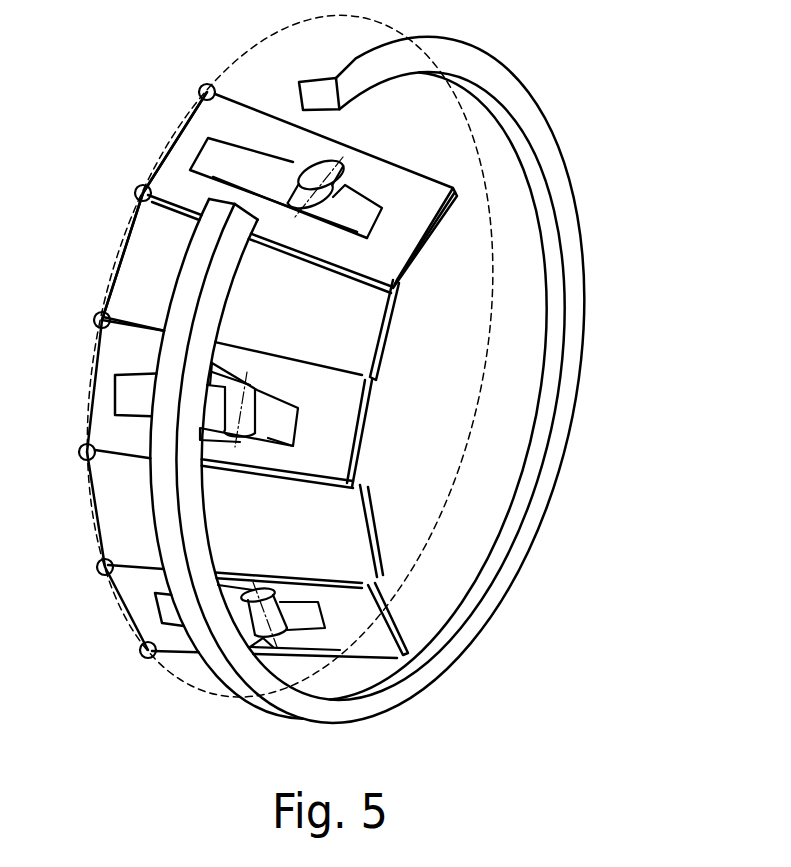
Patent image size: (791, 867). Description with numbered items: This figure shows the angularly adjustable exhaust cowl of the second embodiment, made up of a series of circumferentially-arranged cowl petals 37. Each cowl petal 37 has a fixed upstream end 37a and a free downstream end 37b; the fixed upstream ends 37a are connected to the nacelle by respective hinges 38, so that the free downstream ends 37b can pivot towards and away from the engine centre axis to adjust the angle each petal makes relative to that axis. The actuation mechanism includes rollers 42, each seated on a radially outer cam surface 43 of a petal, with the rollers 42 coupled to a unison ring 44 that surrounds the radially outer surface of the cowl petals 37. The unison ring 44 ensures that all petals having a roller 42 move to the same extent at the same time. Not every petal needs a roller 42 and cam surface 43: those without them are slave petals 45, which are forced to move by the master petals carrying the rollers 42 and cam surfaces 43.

The cowl petal 37 is at (217, 125).
The fixed upstream end 37a is at (180, 127).
The free downstream end 37b is at (453, 210).
The hinge 38 is at (206, 86).
The roller 42 is at (300, 619).
The radially outer cam surface 43 is at (393, 227).
The unison ring 44 is at (485, 45).
The slave petal 45 is at (138, 260).